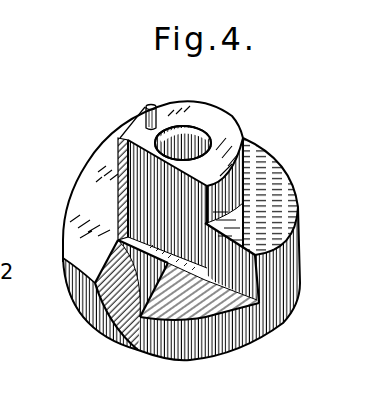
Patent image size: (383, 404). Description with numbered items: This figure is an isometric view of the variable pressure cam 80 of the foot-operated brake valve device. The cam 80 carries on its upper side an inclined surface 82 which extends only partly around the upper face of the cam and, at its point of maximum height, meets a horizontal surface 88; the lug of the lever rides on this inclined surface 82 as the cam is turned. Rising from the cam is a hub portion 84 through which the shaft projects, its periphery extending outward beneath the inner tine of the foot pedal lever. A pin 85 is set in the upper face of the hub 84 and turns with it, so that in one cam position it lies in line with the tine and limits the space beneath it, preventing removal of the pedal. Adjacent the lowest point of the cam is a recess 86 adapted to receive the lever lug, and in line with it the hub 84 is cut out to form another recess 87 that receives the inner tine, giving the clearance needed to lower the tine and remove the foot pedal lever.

The cam 80 is at (62, 233).
The inclined surface 82 is at (96, 178).
The hub portion 84 is at (188, 118).
The pin 85 is at (152, 105).
The recess 86 is at (138, 348).
The recess 87 is at (258, 306).
The horizontal surface 88 is at (270, 175).